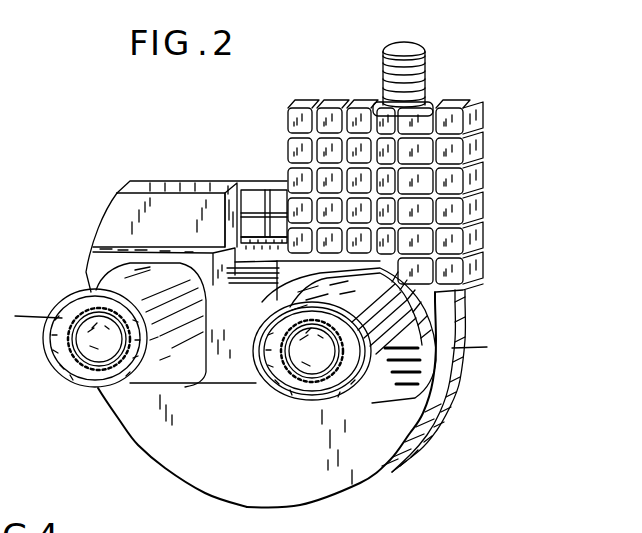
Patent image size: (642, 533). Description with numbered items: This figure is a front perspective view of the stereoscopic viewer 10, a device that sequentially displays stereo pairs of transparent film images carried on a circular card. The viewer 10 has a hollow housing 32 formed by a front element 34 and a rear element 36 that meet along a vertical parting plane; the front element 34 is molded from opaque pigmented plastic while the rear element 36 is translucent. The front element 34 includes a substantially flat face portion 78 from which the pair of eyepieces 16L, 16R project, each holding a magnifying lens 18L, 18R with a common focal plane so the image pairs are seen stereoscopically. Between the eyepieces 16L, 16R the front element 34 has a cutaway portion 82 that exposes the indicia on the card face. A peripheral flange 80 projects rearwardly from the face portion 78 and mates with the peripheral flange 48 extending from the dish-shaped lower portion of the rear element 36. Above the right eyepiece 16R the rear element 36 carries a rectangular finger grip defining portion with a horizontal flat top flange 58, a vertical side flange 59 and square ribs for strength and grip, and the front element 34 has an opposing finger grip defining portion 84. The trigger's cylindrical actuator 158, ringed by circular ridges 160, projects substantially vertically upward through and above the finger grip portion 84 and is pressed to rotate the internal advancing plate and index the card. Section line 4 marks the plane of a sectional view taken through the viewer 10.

The stereoscopic viewer 10 is at (162, 128).
The section line 4- 4 is at (27, 331).
The left eyepiece 16L is at (104, 283).
The right eyepiece 16R is at (381, 386).
The left magnifying lens 18L is at (92, 347).
The right magnifying lens 18R is at (314, 358).
The housing 32 is at (122, 449).
The front element 34 is at (157, 471).
The rear element 36 is at (461, 396).
The peripheral flange 48 is at (462, 308).
The horizontal flat top flange 58 is at (451, 100).
The vertical side flange 59 is at (480, 105).
The face portion 78 is at (250, 441).
The peripheral flange 80 is at (431, 417).
The cutaway portion 82 is at (262, 256).
The finger grip defining portion 84 is at (329, 150).
The cylindrical actuator 158 is at (371, 49).
The circular ridges 160 is at (383, 80).